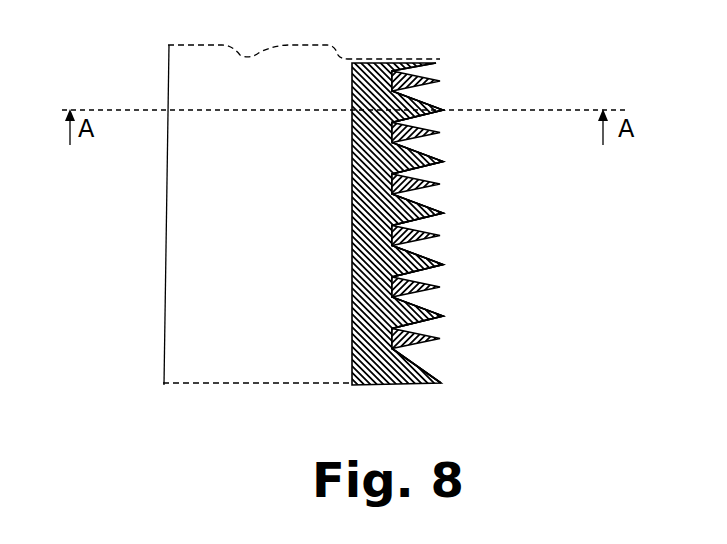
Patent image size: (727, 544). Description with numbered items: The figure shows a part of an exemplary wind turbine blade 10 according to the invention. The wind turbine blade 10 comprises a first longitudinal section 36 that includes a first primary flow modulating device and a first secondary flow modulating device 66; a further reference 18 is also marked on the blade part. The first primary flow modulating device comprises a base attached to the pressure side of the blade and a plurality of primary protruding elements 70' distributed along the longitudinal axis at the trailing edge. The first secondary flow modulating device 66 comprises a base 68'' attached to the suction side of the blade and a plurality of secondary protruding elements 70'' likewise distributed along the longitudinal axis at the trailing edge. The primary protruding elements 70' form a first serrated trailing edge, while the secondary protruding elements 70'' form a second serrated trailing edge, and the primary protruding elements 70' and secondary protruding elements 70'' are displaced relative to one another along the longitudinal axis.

The wind turbine blade 10 is at (128, 63).
The base 18 is at (166, 270).
The first longitudinal section 36 is at (183, 192).
The first secondary flow modulating device 66 is at (351, 258).
The base 68'' is at (341, 223).
The primary protruding elements 70' is at (468, 225).
The secondary protruding elements 70'' is at (363, 272).